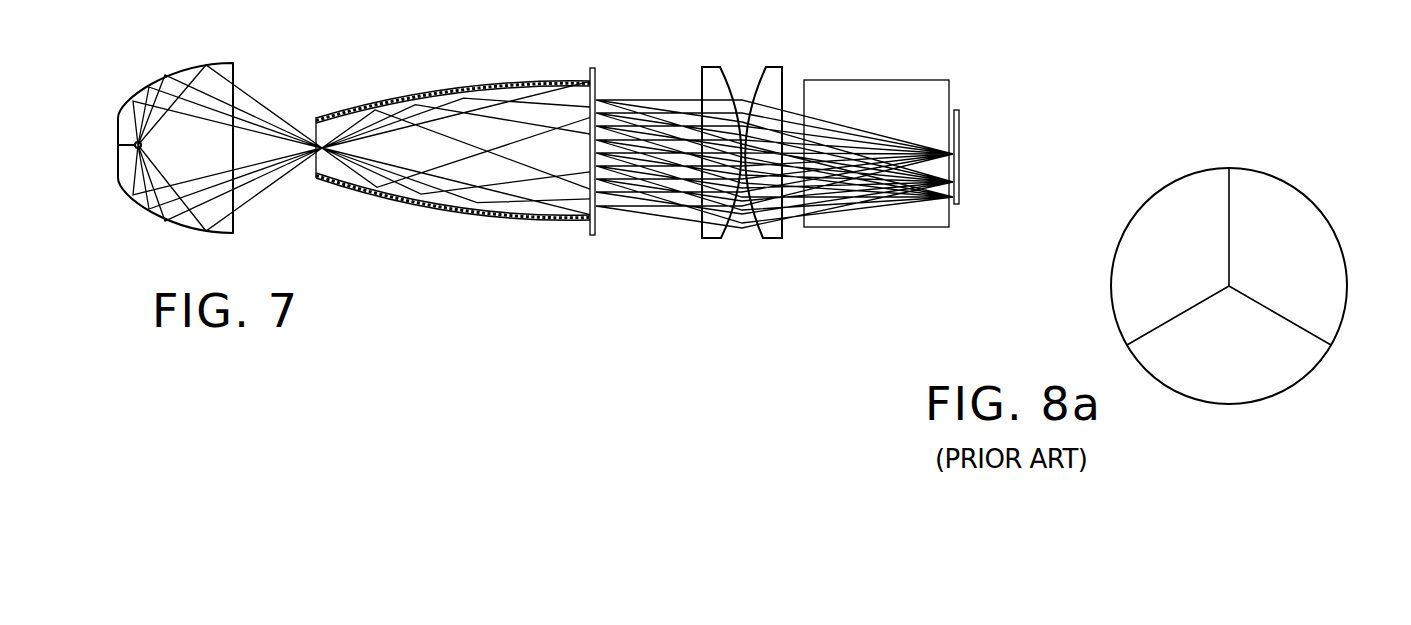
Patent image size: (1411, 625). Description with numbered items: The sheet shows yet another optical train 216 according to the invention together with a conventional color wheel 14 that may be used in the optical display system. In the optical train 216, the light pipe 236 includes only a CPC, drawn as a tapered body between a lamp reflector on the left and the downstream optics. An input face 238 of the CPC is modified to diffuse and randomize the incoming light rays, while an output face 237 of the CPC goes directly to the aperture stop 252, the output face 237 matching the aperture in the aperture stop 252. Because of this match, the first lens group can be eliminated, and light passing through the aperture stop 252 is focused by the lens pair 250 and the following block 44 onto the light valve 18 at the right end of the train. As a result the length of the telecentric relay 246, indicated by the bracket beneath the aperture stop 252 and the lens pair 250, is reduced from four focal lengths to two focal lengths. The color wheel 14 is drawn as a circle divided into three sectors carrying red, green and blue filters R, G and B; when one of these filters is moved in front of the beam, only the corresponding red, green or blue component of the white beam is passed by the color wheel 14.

In FIG. 8A, the color wheel 14 is at (1338, 233).
In FIG. 7, the light valve 18 is at (960, 117).
In FIG. 7, the condenser / relay block 44 is at (872, 80).
In FIG. 7, the optical train 216 is at (648, 68).
In FIG. 7, the light pipe 236 is at (453, 164).
In FIG. 7, the output face 237 is at (572, 204).
In FIG. 7, the input face 238 is at (338, 103).
In FIG. 7, the telecentric relay 246 is at (782, 262).
In FIG. 7, the lens pair 250 is at (702, 63).
In FIG. 7, the aperture stop 252 is at (598, 218).